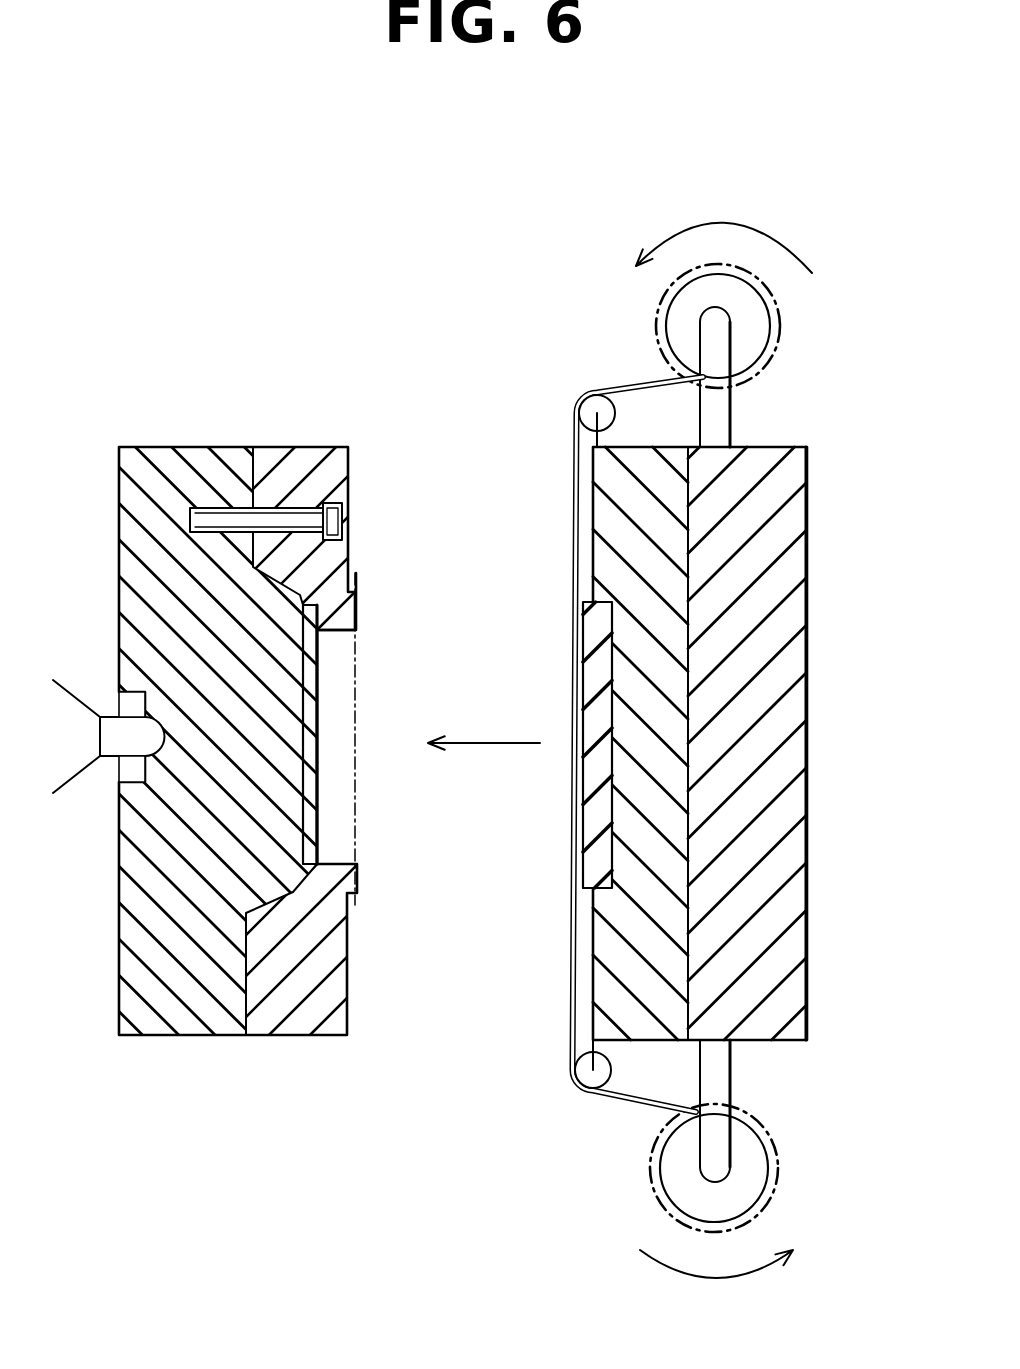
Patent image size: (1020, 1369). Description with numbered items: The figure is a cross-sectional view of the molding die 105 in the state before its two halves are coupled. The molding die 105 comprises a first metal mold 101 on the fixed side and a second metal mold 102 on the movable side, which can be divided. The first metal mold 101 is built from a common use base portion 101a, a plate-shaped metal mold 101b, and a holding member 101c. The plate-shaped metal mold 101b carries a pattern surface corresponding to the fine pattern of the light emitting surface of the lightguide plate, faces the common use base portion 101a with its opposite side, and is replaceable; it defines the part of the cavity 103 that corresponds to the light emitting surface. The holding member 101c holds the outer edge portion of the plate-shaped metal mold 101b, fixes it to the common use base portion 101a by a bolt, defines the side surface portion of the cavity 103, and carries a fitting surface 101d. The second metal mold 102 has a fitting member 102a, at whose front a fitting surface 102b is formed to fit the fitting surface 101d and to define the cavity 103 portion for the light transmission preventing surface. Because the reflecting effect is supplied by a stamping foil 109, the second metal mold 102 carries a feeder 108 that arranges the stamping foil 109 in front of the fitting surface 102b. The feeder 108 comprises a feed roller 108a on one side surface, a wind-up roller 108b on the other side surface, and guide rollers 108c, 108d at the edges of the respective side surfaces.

The molding die 105 is at (452, 245).
The first metal mold 101 is at (260, 400).
The common use base portion 101a is at (180, 457).
The plate-shaped metal mold 101b is at (318, 745).
The holding member 101c is at (354, 455).
The fitting surface 101d is at (357, 615).
The cavity 103 is at (339, 813).
The second metal mold 102 is at (833, 455).
The fitting member 102a is at (583, 765).
The fitting surface 102b is at (588, 872).
The feeder 108 is at (815, 305).
The feed roller 108a is at (675, 322).
The wind-up roller 108b is at (670, 1172).
The guide roller 108c is at (586, 400).
The guide roller 108d is at (586, 1085).
The stamping foil 109 is at (612, 386).